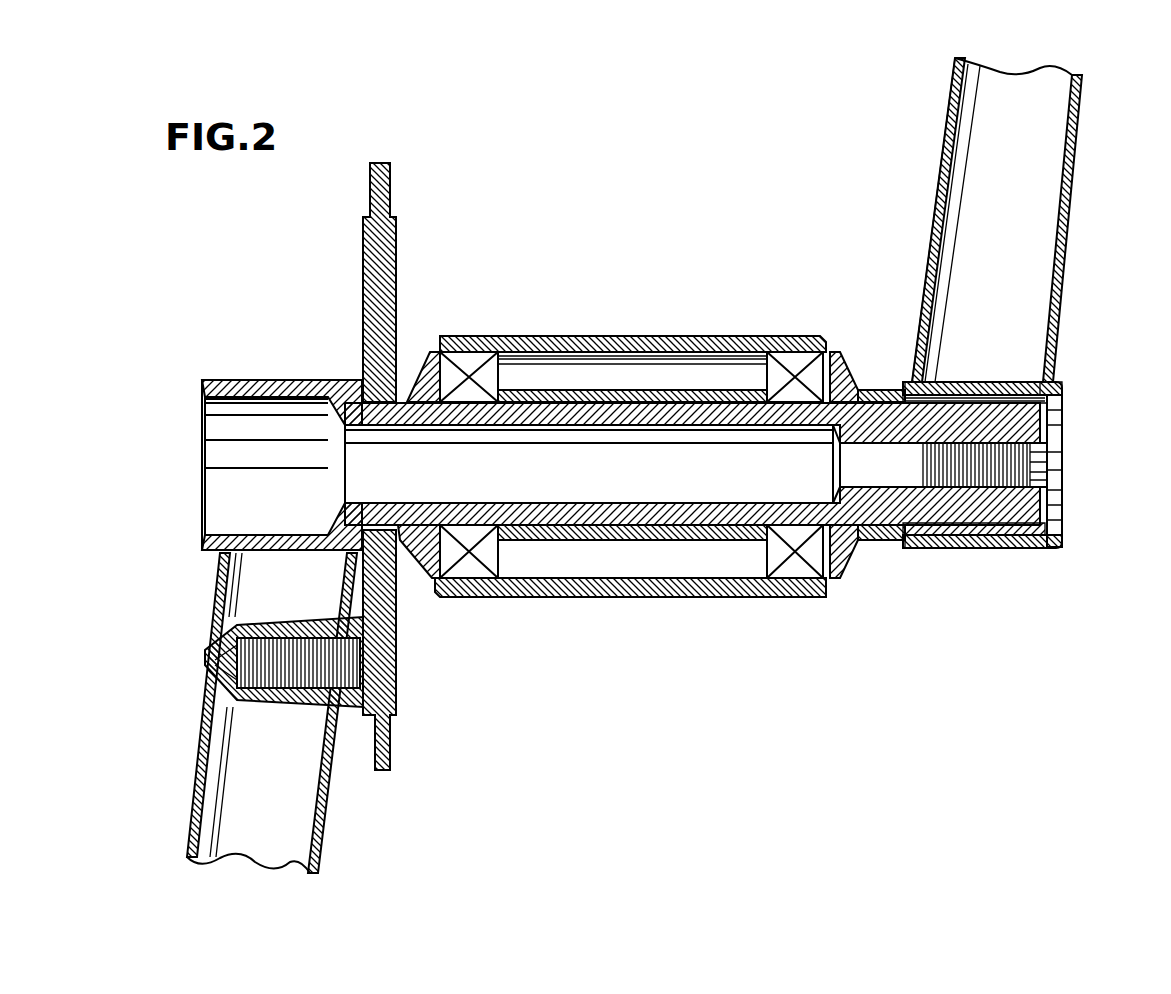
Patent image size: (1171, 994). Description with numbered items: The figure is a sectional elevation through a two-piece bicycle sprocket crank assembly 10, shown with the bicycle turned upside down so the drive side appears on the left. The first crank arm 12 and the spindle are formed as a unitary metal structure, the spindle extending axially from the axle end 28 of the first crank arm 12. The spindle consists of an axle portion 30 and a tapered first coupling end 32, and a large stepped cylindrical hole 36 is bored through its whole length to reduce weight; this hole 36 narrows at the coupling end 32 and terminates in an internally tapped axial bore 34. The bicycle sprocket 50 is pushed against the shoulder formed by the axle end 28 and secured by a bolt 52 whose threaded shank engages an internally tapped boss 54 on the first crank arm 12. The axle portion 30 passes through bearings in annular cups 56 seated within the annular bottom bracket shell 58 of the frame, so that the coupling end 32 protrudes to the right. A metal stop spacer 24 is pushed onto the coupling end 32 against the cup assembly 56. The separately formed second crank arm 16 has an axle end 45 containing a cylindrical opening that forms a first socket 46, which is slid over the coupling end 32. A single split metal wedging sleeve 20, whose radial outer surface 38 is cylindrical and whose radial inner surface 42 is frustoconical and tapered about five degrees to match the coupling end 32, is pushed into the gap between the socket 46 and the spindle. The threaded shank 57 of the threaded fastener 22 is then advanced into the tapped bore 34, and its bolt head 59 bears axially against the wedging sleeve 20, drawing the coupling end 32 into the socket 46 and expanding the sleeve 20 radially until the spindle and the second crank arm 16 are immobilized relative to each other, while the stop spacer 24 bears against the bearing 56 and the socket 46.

The bicycle sprocket crank assembly 10 is at (596, 218).
The first crank arm 12 is at (295, 800).
The second crank arm 16 is at (1042, 232).
The wedging sleeve 20 is at (972, 392).
The threaded fastener 22 is at (1075, 463).
The stop spacer 24 is at (880, 545).
The axle end 28 is at (215, 560).
The axle portion 30 is at (650, 503).
The first coupling end 32 is at (995, 396).
The internally tapped axial bore 34 is at (982, 470).
The stepped cylindrical hole 36 is at (550, 428).
The radial outer surface 38 is at (1062, 386).
The radial inner surface 42 is at (1050, 416).
The axle end 45 is at (915, 346).
The first socket 46 is at (1050, 555).
The bicycle sprocket 50 is at (367, 255).
The bolt 52 is at (385, 665).
The internally tapped boss 54 is at (350, 710).
The annular cups 56 is at (466, 352).
The threaded shank 57 is at (930, 462).
The bottom bracket shell 58 is at (660, 337).
The bolt head 59 is at (1060, 490).